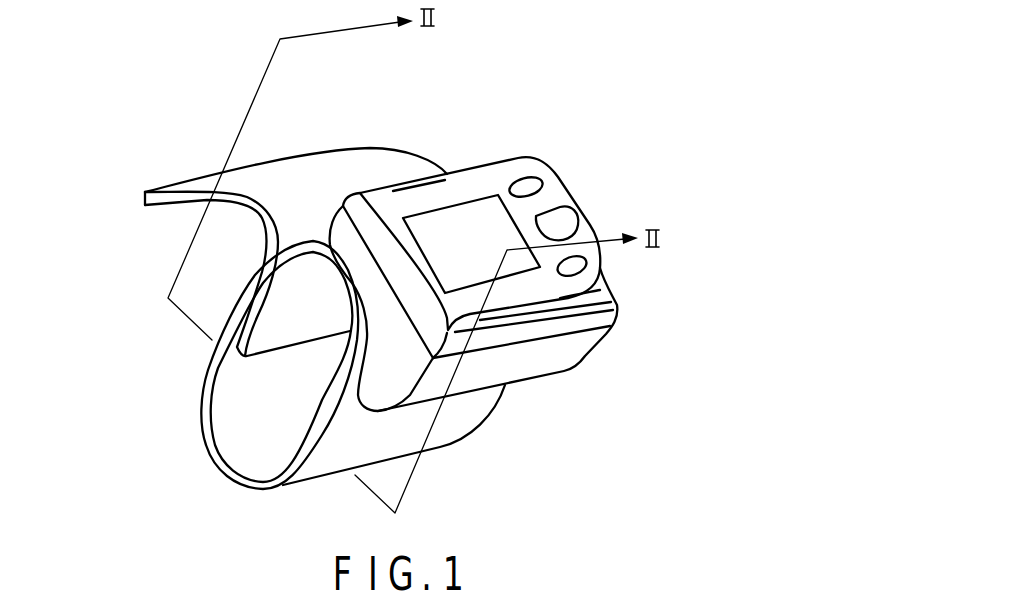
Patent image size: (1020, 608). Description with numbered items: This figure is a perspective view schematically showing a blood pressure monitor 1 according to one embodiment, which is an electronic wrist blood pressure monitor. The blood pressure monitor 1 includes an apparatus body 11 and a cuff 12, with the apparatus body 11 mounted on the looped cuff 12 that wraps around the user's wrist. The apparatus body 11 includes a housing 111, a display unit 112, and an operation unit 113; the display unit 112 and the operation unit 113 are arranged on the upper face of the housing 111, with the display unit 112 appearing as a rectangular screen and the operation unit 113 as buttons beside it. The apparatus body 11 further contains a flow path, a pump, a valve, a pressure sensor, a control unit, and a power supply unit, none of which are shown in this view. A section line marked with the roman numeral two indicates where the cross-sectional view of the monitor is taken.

The blood pressure monitor 1 is at (427, 261).
The apparatus body 11 is at (511, 268).
The housing 111 is at (562, 355).
The display unit 112 is at (475, 218).
The operation unit 113 is at (552, 223).
The cuff 12 is at (445, 436).